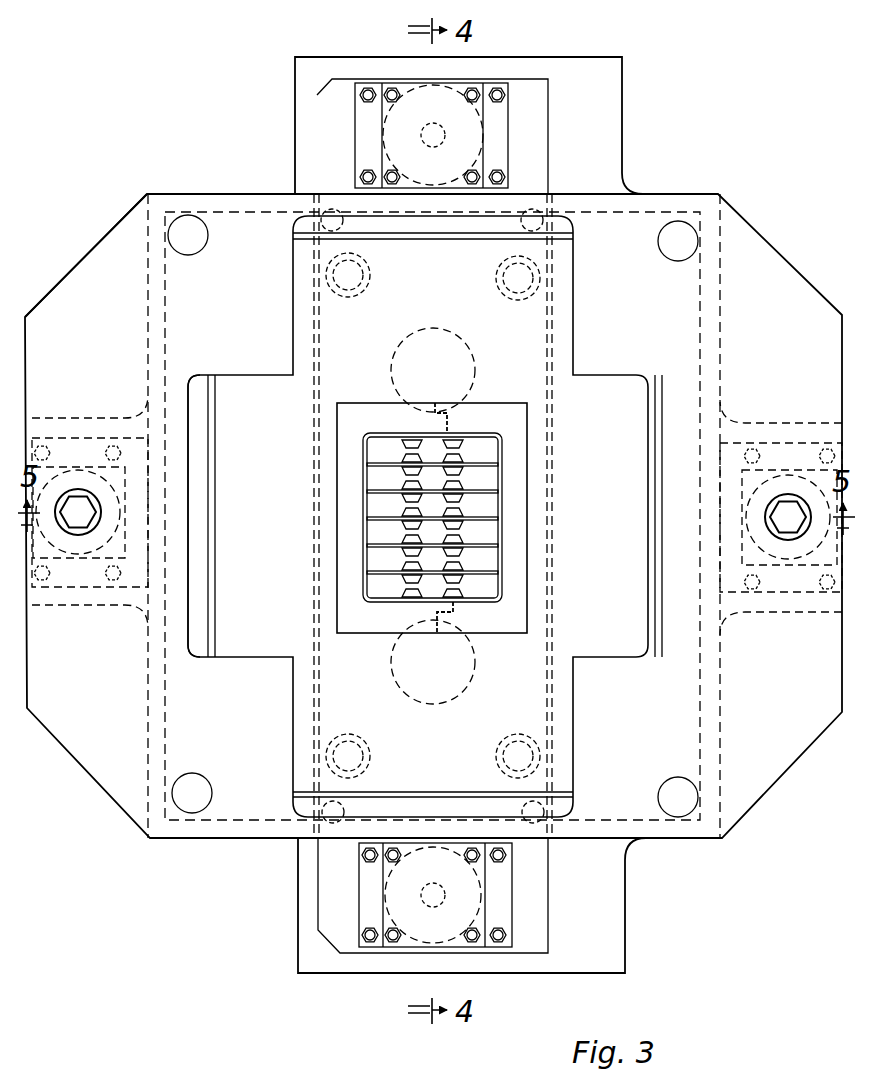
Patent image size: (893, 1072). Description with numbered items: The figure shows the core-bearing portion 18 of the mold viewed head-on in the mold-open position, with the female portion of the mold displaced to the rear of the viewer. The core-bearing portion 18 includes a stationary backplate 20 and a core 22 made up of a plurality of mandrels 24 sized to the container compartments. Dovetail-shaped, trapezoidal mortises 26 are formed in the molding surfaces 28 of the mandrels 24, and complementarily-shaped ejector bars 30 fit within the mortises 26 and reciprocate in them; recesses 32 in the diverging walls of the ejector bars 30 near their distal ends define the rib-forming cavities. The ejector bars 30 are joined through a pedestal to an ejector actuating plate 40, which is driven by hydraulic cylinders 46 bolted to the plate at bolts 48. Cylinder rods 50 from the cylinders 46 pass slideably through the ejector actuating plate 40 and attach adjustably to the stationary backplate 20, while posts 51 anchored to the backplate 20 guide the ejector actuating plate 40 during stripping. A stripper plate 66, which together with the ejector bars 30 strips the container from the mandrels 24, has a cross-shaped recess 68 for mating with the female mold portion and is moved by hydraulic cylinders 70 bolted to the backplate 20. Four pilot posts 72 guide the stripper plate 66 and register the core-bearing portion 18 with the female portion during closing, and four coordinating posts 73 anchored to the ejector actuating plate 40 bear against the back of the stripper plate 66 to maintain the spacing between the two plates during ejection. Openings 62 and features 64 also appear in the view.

The core-bearing portion 18 is at (640, 126).
The stationary backplate 20 is at (617, 945).
The core 22 is at (484, 613).
The mandrels 24 is at (490, 582).
The mortises 26 is at (462, 452).
The molding surfaces 28 is at (382, 546).
The ejector bars 30 is at (448, 597).
The recesses 32 is at (415, 458).
The ejector actuating plate 40 is at (330, 915).
The hydraulic cylinders 46 is at (452, 97).
The bolts 48 is at (368, 92).
The cylinder rods 50 is at (438, 133).
The posts 51 is at (348, 280).
The openings 62 is at (433, 357).
The cover plate 64 is at (243, 242).
The stripper plate 66 is at (108, 262).
The cross-shaped recess 68 is at (297, 292).
The hydraulic cylinders 70 is at (76, 558).
The pilot posts 72 is at (190, 232).
The coordinating posts 73 is at (338, 221).